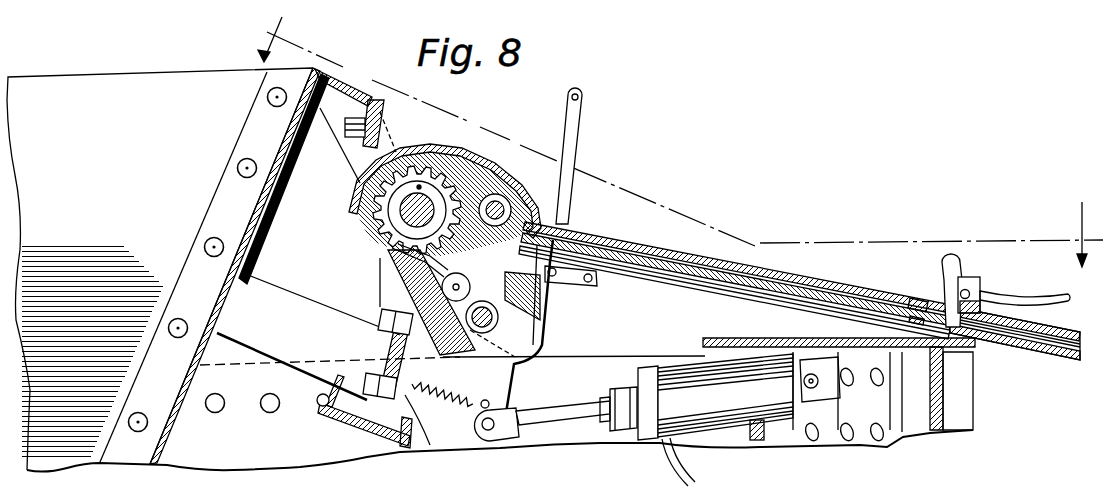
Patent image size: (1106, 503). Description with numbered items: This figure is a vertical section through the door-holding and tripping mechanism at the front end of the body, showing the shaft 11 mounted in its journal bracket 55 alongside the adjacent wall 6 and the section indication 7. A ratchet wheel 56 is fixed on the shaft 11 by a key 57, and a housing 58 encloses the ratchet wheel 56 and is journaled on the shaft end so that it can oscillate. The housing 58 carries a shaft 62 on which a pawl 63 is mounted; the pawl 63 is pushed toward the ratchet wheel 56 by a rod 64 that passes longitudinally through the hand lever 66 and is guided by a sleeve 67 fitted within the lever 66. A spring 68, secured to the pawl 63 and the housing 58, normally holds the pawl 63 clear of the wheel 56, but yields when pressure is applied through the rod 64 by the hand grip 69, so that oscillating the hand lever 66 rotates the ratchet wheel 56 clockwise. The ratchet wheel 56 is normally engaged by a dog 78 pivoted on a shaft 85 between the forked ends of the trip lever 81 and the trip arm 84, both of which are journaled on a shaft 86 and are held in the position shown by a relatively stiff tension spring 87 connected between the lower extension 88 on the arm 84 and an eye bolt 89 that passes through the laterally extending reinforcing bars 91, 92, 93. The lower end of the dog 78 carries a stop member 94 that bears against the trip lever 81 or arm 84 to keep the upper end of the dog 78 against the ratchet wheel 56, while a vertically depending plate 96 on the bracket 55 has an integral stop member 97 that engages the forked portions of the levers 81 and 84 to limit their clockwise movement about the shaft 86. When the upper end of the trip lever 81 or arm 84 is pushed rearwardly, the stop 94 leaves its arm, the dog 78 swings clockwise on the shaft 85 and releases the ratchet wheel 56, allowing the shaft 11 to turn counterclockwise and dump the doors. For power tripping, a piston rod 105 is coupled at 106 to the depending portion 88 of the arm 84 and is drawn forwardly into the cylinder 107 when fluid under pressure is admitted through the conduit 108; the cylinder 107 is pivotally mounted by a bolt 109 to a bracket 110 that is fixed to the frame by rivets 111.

The side plate 6 is at (97, 102).
The section line 7 is at (672, 142).
The shaft 11 is at (393, 203).
The journal bracket 55 is at (395, 133).
The ratchet wheel 56 is at (388, 222).
The key 57 is at (470, 178).
The housing 58 is at (360, 180).
The shaft 62 is at (497, 200).
The pawl 63 is at (562, 202).
The rod 64 is at (747, 270).
The hand lever 66 is at (805, 276).
The sleeve 67 is at (916, 312).
The spring 68 is at (583, 296).
The hand grip 69 is at (1010, 298).
The dog 78 is at (442, 282).
The trip lever 81 is at (560, 150).
The trip arm 84 is at (502, 320).
The shaft 85 is at (446, 281).
The shaft 86 is at (522, 354).
The tension spring 87 is at (463, 407).
The lower extension 88 is at (512, 396).
The eye bolt 89 is at (427, 410).
The reinforcing bar 91 is at (388, 334).
The reinforcing bar 92 is at (382, 352).
The reinforcing bar 93 is at (318, 374).
The stop member 94 is at (433, 320).
The web portion or plate 96 is at (378, 257).
The stop member 97 is at (535, 302).
The piston rod 105 is at (575, 414).
The coupling 106 is at (493, 432).
The cylinder 107 is at (745, 422).
The conduit 108 is at (677, 478).
The bolt 109 is at (810, 373).
The bracket 110 is at (817, 410).
The rivet 111 is at (853, 390).